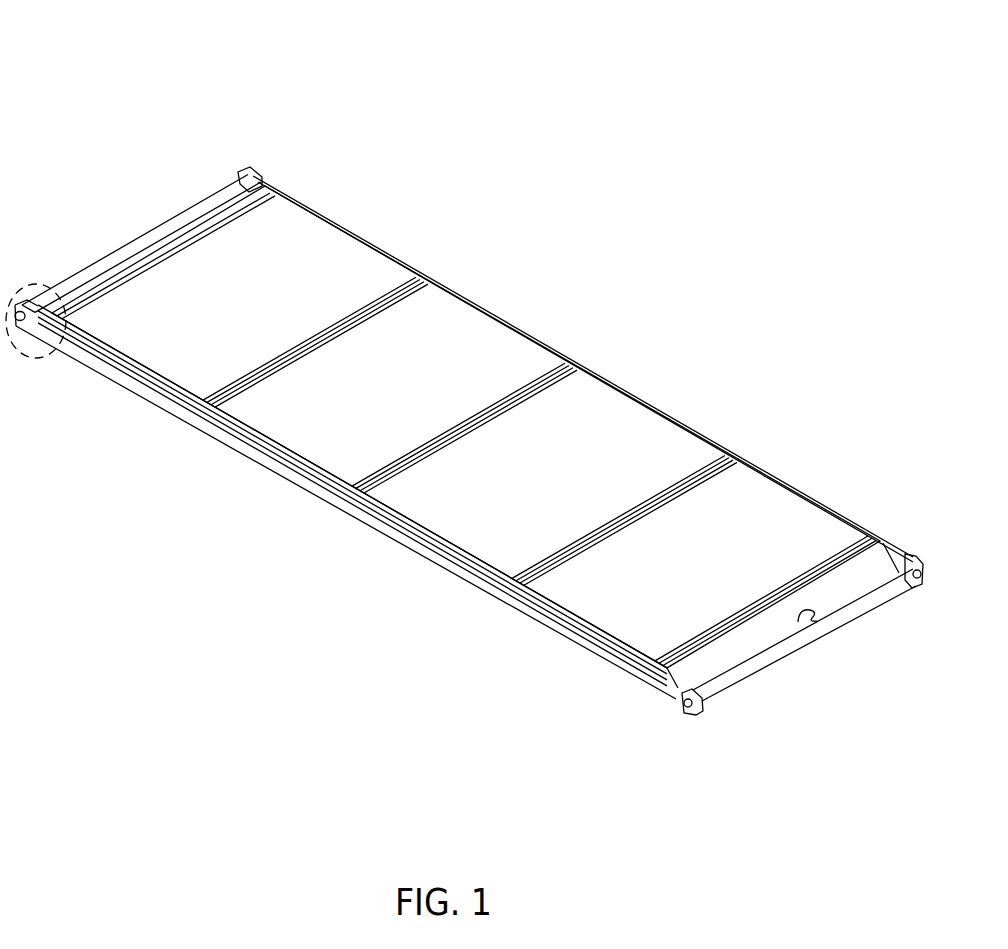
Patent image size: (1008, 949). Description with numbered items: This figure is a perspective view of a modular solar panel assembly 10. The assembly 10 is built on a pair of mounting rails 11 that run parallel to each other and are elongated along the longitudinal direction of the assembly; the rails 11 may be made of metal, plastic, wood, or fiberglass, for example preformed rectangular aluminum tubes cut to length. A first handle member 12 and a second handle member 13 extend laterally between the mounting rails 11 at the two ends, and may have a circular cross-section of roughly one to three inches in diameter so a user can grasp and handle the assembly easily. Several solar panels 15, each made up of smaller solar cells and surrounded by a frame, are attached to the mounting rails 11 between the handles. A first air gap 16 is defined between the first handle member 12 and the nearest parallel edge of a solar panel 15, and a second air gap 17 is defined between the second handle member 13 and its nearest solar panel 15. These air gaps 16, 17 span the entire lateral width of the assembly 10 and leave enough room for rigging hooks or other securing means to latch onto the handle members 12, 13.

The solar panel assembly 10 is at (148, 92).
The mounting rails 11 is at (296, 474).
The first handle member 12 is at (747, 667).
The second handle member 13 is at (199, 210).
The solar panels 15 is at (248, 300).
The first air gap 16 is at (798, 609).
The second air gap 17 is at (142, 256).